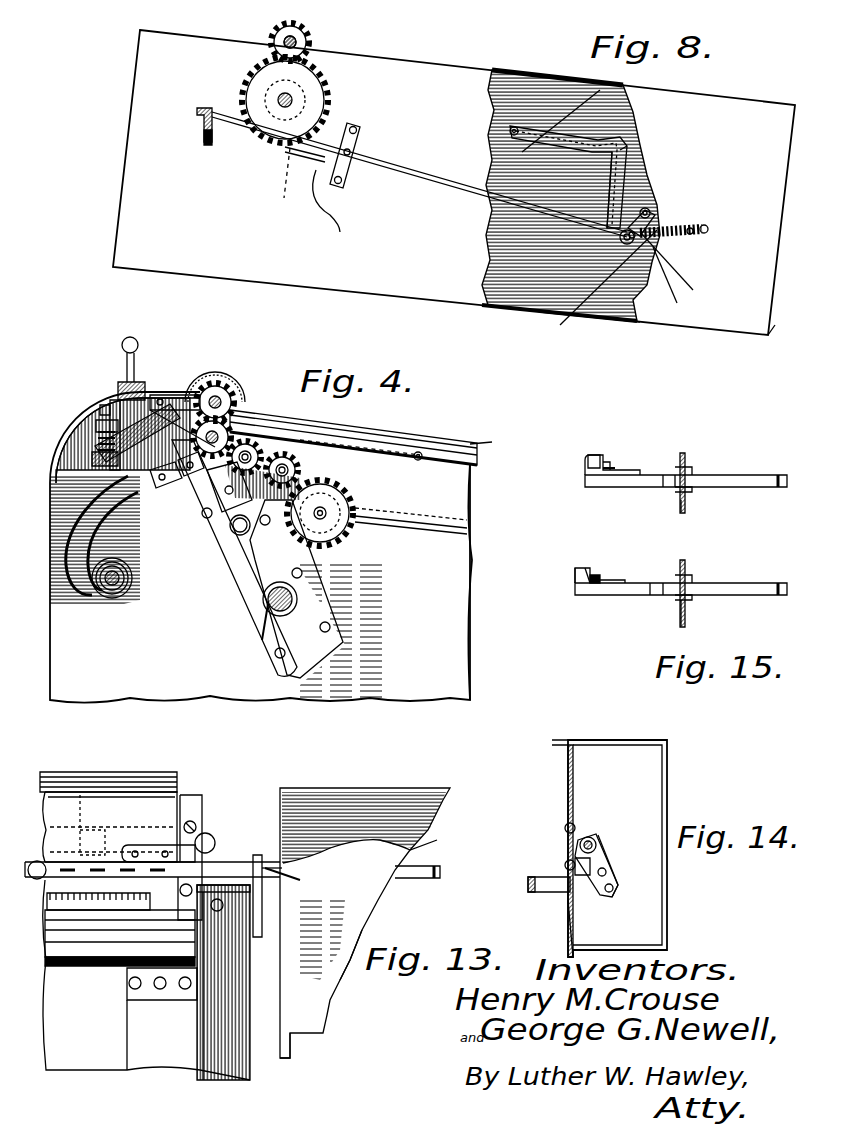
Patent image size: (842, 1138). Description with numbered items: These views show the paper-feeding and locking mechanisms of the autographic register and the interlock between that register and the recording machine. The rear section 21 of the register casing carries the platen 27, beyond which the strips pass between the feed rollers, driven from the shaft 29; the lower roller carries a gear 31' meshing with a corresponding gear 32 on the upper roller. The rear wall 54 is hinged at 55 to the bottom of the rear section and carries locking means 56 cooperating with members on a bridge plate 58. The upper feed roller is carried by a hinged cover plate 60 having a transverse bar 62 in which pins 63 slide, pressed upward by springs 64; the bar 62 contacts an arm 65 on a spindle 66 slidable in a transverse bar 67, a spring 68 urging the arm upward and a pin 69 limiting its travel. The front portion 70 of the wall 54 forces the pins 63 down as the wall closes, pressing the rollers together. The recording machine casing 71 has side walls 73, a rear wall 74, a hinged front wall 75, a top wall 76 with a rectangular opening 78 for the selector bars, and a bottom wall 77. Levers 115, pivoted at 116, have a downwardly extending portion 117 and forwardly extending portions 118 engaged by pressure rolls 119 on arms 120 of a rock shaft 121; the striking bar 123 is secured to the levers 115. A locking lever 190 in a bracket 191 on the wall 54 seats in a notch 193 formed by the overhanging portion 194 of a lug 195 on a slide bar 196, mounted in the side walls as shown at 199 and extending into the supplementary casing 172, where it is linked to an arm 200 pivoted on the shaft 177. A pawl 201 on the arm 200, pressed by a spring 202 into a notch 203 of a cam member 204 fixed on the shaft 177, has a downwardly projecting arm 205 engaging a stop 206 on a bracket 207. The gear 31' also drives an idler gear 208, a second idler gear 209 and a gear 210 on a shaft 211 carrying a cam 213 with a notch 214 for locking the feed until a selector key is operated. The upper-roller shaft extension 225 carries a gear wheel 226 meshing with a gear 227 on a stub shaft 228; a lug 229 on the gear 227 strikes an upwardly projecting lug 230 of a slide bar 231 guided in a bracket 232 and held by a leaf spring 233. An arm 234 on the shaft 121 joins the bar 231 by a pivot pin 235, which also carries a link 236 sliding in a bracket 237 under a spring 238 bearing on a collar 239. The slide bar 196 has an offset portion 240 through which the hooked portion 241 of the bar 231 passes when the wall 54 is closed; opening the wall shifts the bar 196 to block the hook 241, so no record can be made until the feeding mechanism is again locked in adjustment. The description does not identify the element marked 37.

In FIG. 4, the rear section 21 is at (82, 692).
In FIG. 4, the platen 27 is at (482, 450).
In FIG. 4, the shaft 29 is at (262, 600).
In FIG. 4, the gear 31' is at (235, 372).
In FIG. 4, the gear 32 is at (228, 384).
In FIG. 4, the hub 37 is at (125, 595).
In FIG. 4, the rear wall 54 is at (75, 642).
In FIG. 13, the rear wall 54 is at (150, 790).
In FIG. 4, the hinge 55 is at (180, 482).
In FIG. 4, the locking means 56 is at (110, 520).
In FIG. 4, the bridge plate 58 is at (455, 530).
In FIG. 4, the cover plate 60 is at (480, 440).
In FIG. 13, the cover plate 60 is at (252, 1076).
In FIG. 4, the transverse bar 62 is at (112, 398).
In FIG. 13, the transverse bar 62 is at (129, 1019).
In FIG. 4, the pins 63 is at (124, 380).
In FIG. 13, the pins 63 is at (105, 883).
In FIG. 4, the springs 64 is at (172, 394).
In FIG. 4, the arm 65 is at (103, 404).
In FIG. 13, the arm 65 is at (195, 795).
In FIG. 4, the spindle 66 is at (92, 456).
In FIG. 13, the spindle 66 is at (100, 828).
In FIG. 4, the transverse bar 67 is at (98, 436).
In FIG. 13, the transverse bar 67 is at (80, 792).
In FIG. 4, the spring 68 is at (100, 420).
In FIG. 4, the pin 69 is at (65, 460).
In FIG. 4, the front portion 70 is at (160, 410).
In FIG. 13, the front portion 70 is at (70, 770).
In FIG. 8, the casing 71 is at (470, 300).
In FIG. 15, the casing 71 is at (688, 570).
In FIG. 13, the casing 71 is at (352, 970).
In FIG. 14, the casing 71 is at (568, 920).
In FIG. 8, the side walls 73 is at (635, 322).
In FIG. 15, the side walls 73 is at (681, 562).
In FIG. 13, the side walls 73 is at (272, 862).
In FIG. 14, the side walls 73 is at (567, 762).
In FIG. 8, the rear wall 74 is at (122, 200).
In FIG. 8, the hinged front wall 75 is at (775, 320).
In FIG. 8, the top wall 76 is at (712, 100).
In FIG. 13, the top wall 76 is at (390, 788).
In FIG. 14, the top wall 76 is at (562, 738).
In FIG. 8, the bottom wall 77 is at (596, 323).
In FIG. 13, the rectangular opening 78 is at (298, 1040).
In FIG. 8, the lever arms 115 is at (560, 130).
In FIG. 8, the pivot 116 is at (513, 126).
In FIG. 8, the downwardly extending portion 117 is at (632, 160).
In FIG. 8, the forwardly extending portions 118 is at (685, 284).
In FIG. 8, the pressure rolls 119 is at (650, 208).
In FIG. 8, the arms 120 is at (656, 213).
In FIG. 8, the rock shaft 121 is at (645, 228).
In FIG. 8, the striking bar 123 is at (602, 90).
In FIG. 14, the supplementary casing 172 is at (668, 760).
In FIG. 14, the shaft 177 is at (595, 845).
In FIG. 4, the locking lever 190 is at (138, 350).
In FIG. 15, the locking lever 190 is at (592, 456).
In FIG. 13, the locking lever 190 is at (214, 838).
In FIG. 4, the bracket 191 is at (150, 392).
In FIG. 13, the bracket 191 is at (196, 845).
In FIG. 15, the notch 193 is at (603, 468).
In FIG. 15, the overhanging portion 194 is at (606, 466).
In FIG. 15, the lug 195 is at (584, 474).
In FIG. 8, the slide bar 196 is at (205, 146).
In FIG. 15, the slide bar 196 is at (755, 580).
In FIG. 13, the slide bar 196 is at (414, 879).
In FIG. 14, the slide bar 196 is at (540, 878).
In FIG. 15, the slide bar mounting 199 is at (695, 470).
In FIG. 14, the arm 200 is at (616, 893).
In FIG. 14, the pawl 201 is at (614, 880).
In FIG. 14, the spring 202 is at (608, 868).
In FIG. 14, the notch 203 is at (571, 823).
In FIG. 14, the cam member 204 is at (605, 855).
In FIG. 14, the downwardly projecting arm 205 is at (580, 876).
In FIG. 14, the stop 206 is at (565, 862).
In FIG. 14, the bracket 207 is at (592, 836).
In FIG. 4, the idler gear 208 is at (250, 450).
In FIG. 4, the second idler gear 209 is at (330, 460).
In FIG. 4, the gear 210 is at (340, 540).
In FIG. 4, the shaft 211 is at (328, 510).
In FIG. 4, the cam 213 is at (470, 440).
In FIG. 4, the notch 214 is at (395, 450).
In FIG. 8, the extension 225 is at (270, 40).
In FIG. 8, the gear wheel 226 is at (304, 32).
In FIG. 8, the gear 227 is at (305, 92).
In FIG. 8, the stub shaft 228 is at (320, 102).
In FIG. 8, the lug 229 is at (245, 92).
In FIG. 8, the upwardly projecting lug 230 is at (298, 181).
In FIG. 8, the slide bar 231 is at (420, 170).
In FIG. 13, the slide bar 231 is at (265, 912).
In FIG. 8, the bracket 232 is at (362, 148).
In FIG. 8, the leaf spring 233 is at (341, 207).
In FIG. 8, the arm 234 is at (660, 228).
In FIG. 8, the pivot pin 235 is at (590, 285).
In FIG. 8, the link 236 is at (688, 269).
In FIG. 8, the bracket 237 is at (690, 236).
In FIG. 8, the spring 238 is at (710, 233).
In FIG. 8, the collar 239 is at (706, 229).
In FIG. 8, the offset portion 240 is at (282, 149).
In FIG. 15, the offset portion 240 is at (663, 488).
In FIG. 13, the offset portion 240 is at (373, 849).
In FIG. 8, the hooked portion 241 is at (197, 112).
In FIG. 13, the hooked portion 241 is at (300, 880).